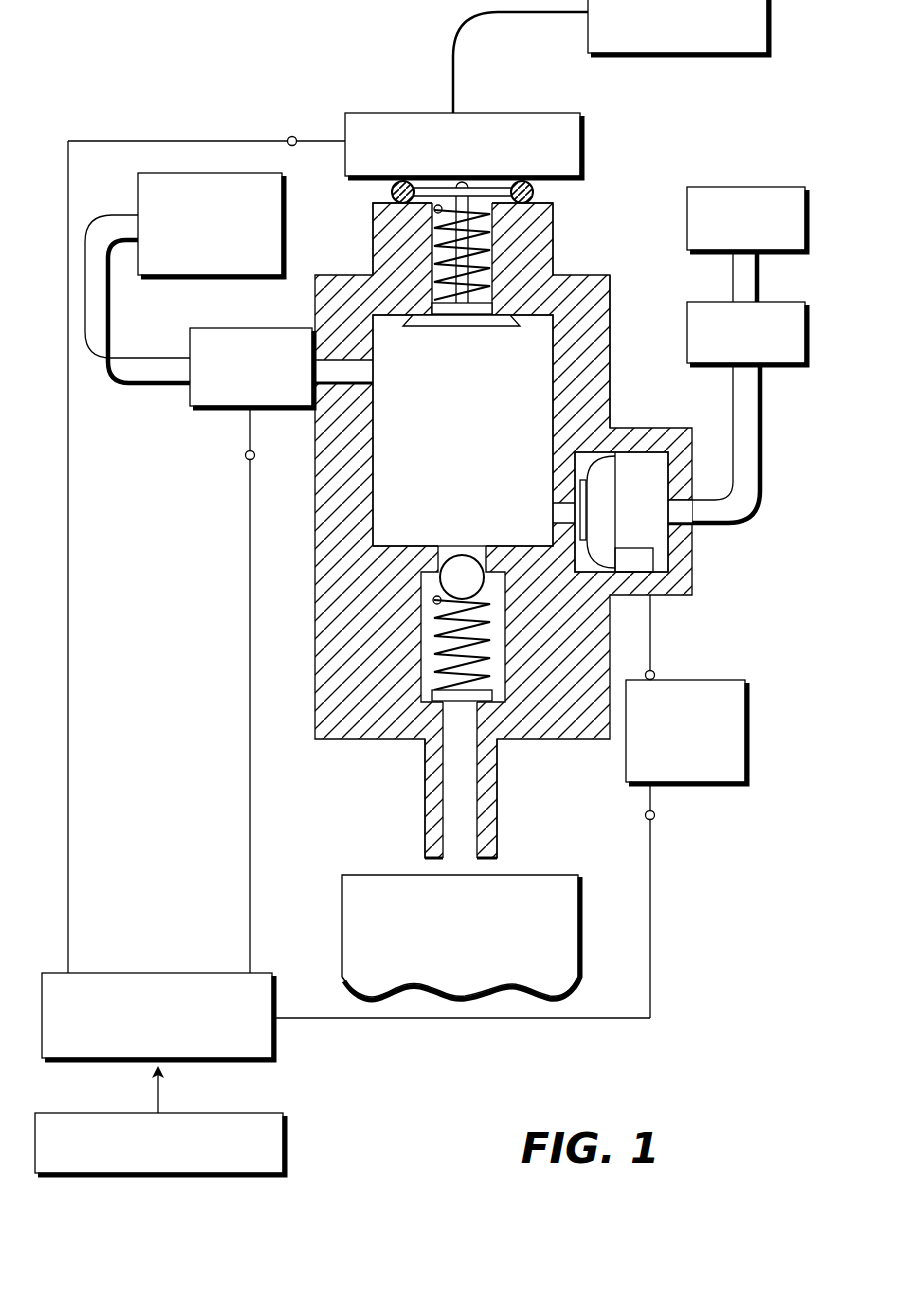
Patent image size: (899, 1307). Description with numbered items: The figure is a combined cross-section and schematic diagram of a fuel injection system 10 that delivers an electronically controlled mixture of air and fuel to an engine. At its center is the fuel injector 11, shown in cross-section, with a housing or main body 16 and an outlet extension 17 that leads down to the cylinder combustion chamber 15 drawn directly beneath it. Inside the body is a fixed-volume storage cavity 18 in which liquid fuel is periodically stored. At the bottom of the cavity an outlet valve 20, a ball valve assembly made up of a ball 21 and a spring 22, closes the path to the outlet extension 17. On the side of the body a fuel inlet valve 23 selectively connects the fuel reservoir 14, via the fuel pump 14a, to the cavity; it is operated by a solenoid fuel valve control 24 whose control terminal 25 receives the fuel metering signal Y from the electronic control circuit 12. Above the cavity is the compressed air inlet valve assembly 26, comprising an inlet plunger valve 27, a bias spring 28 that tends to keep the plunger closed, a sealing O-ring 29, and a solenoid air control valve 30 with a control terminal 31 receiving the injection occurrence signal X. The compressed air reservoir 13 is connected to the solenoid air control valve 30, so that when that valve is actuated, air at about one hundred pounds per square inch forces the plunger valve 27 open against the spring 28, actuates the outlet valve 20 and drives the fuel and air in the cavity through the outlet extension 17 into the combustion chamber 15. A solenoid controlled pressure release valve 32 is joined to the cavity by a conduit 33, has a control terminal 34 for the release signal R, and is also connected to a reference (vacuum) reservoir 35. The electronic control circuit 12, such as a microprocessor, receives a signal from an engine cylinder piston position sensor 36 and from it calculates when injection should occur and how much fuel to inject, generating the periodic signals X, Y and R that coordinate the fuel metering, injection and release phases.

The fuel injection system 10 is at (607, 1097).
The fuel injector 11 is at (348, 741).
The electronic control circuit 12 is at (178, 973).
The compressed air reservoir 13 is at (676, 58).
The fuel reservoir 14 is at (735, 187).
The fuel pump 14a is at (712, 302).
The cylinder combustion chamber 15 is at (546, 874).
The main body 16 is at (612, 351).
The outlet extension 17 is at (433, 803).
The storage cavity 18 is at (520, 356).
The outlet valve 20 is at (470, 535).
The ball 21 is at (455, 577).
The spring 22 is at (438, 635).
The fuel inlet valve 23 is at (617, 487).
The solenoid fuel valve control 24 is at (750, 738).
The control terminal 25 is at (656, 815).
The compressed air inlet valve assembly 26 is at (643, 182).
The inlet plunger valve 27 is at (555, 278).
The bias spring 28 is at (447, 270).
The sealing O-ring 29 is at (392, 191).
The solenoid air control valve 30 is at (582, 152).
The control terminal 31 is at (292, 136).
The pressure release valve 32 is at (250, 328).
The conduit 33 is at (360, 371).
The control terminal 34 is at (246, 455).
The reference (vacuum) reservoir 35 is at (285, 227).
The engine cylinder piston position sensor 36 is at (290, 1145).